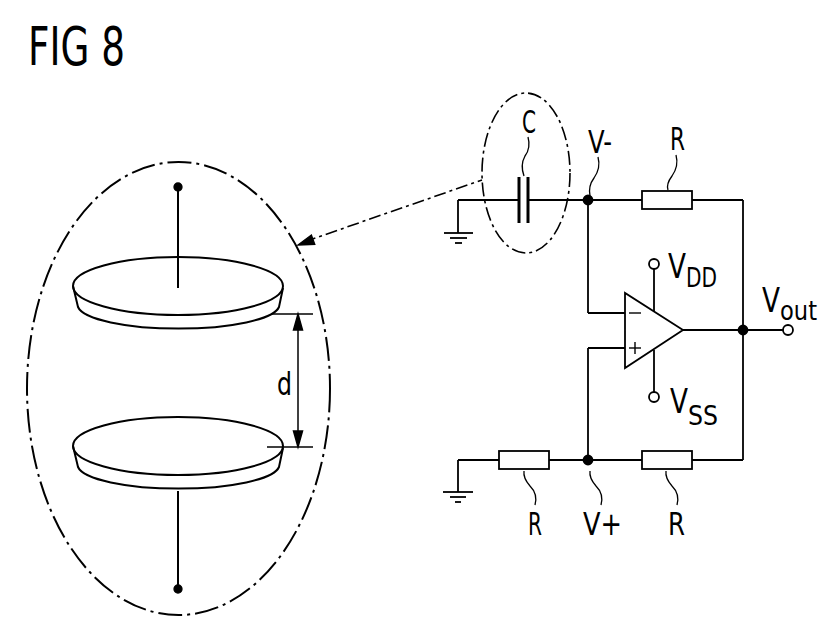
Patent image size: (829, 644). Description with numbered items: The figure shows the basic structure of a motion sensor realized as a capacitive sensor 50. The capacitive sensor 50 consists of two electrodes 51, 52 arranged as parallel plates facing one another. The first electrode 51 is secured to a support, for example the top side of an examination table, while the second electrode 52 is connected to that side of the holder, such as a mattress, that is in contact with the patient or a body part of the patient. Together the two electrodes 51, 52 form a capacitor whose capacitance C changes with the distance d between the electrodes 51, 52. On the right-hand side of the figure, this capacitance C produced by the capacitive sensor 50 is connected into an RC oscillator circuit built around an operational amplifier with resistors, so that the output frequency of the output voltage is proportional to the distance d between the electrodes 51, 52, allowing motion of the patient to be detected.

The capacitive sensor 50 is at (178, 162).
The first electrode 51 is at (180, 428).
The second electrode 52 is at (223, 272).